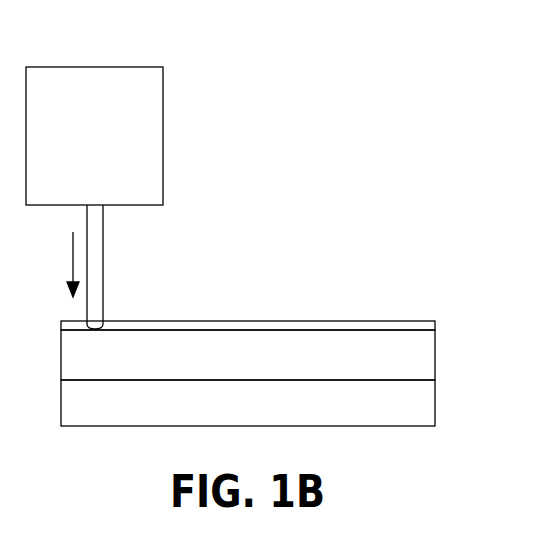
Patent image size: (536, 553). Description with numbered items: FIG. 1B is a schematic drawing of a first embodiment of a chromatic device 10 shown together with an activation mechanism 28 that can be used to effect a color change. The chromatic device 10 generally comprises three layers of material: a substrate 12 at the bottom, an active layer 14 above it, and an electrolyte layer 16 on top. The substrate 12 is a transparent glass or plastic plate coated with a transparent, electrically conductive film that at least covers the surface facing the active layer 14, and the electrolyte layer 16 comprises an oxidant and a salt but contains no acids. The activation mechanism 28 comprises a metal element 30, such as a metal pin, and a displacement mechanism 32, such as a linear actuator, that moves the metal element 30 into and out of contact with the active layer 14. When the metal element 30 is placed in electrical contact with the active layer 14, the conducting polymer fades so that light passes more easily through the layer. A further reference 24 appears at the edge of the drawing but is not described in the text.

The semiconductor structure 10 is at (274, 274).
The substrate 12 is at (427, 403).
The buffer layer 14 is at (413, 353).
The top layer 16 is at (428, 323).
The layer 24 is at (6, 358).
The deposition system 28 is at (214, 174).
The nozzle tube 30 is at (93, 267).
The source 32 is at (84, 148).